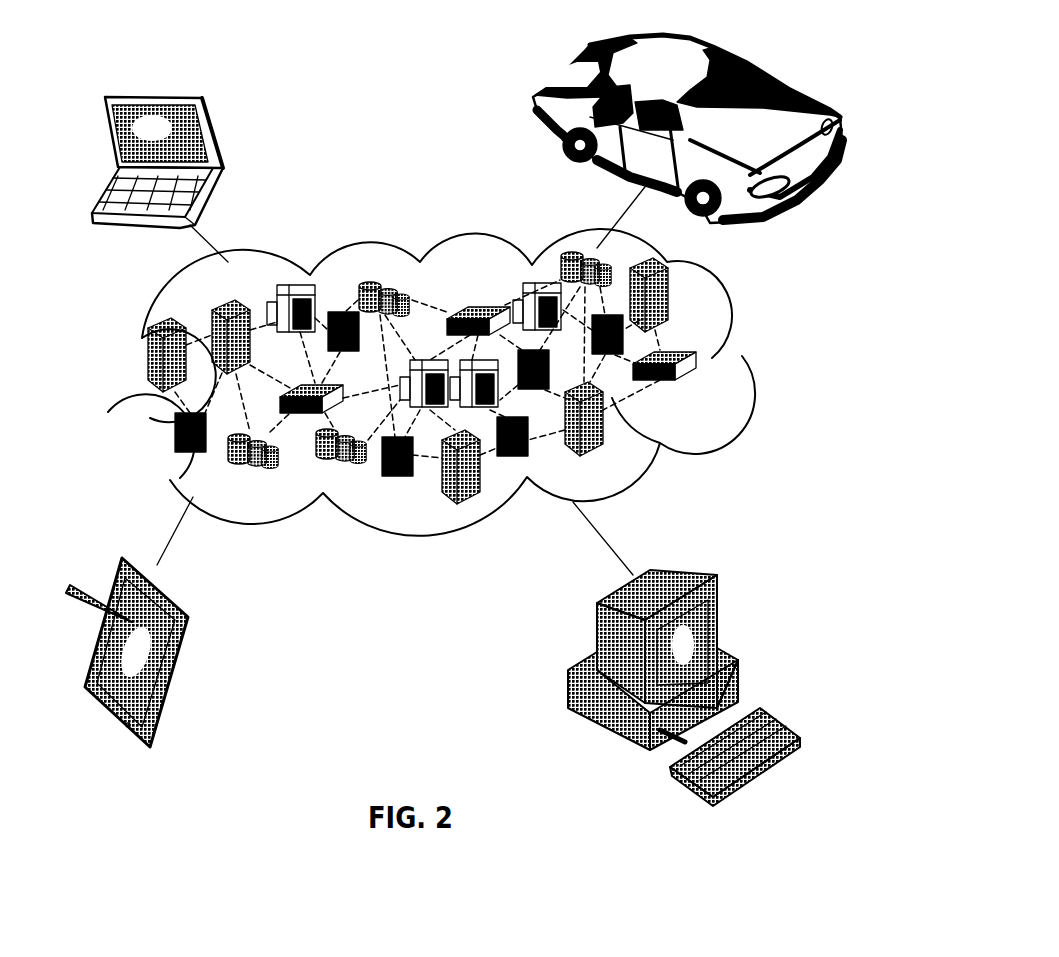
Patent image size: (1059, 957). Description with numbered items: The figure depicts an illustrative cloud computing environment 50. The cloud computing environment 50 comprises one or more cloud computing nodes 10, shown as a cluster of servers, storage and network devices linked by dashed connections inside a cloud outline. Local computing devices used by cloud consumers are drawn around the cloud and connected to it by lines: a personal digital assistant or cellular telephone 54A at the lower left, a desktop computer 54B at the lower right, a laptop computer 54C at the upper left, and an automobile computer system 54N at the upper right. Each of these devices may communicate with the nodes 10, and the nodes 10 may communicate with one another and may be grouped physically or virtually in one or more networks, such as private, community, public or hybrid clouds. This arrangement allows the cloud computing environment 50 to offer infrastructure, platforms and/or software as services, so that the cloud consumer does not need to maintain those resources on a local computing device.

The cloud computing node 10 is at (711, 392).
The cloud computing environment 50 is at (457, 382).
The personal digital assistant (PDA) or cellular telephone 54A is at (188, 645).
The desktop computer 54B is at (688, 572).
The laptop computer 54C is at (213, 133).
The automobile computer system 54N is at (535, 107).